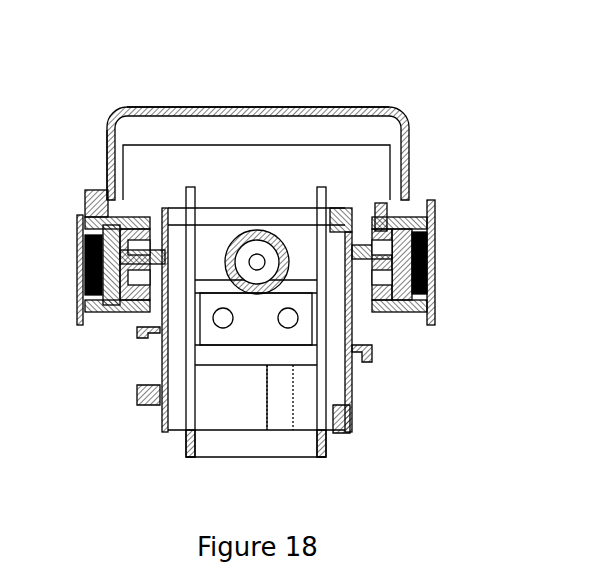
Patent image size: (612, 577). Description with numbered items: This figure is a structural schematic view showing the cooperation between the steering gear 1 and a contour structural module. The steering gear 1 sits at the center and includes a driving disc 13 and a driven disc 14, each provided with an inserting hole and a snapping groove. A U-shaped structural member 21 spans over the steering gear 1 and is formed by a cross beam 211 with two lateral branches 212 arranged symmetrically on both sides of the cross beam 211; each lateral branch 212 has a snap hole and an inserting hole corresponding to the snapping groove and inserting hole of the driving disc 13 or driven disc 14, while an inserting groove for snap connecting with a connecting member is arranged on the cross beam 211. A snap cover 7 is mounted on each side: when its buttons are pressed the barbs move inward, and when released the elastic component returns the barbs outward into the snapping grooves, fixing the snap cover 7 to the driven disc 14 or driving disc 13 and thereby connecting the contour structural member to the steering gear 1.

The steering gear 1 is at (213, 235).
The snap cover 7 is at (78, 267).
The driving disc 13 is at (388, 203).
The driven disc 14 is at (122, 197).
The U-shaped structural member 21 is at (280, 128).
The cross beam 211 is at (235, 110).
The lateral branches 212 is at (110, 140).